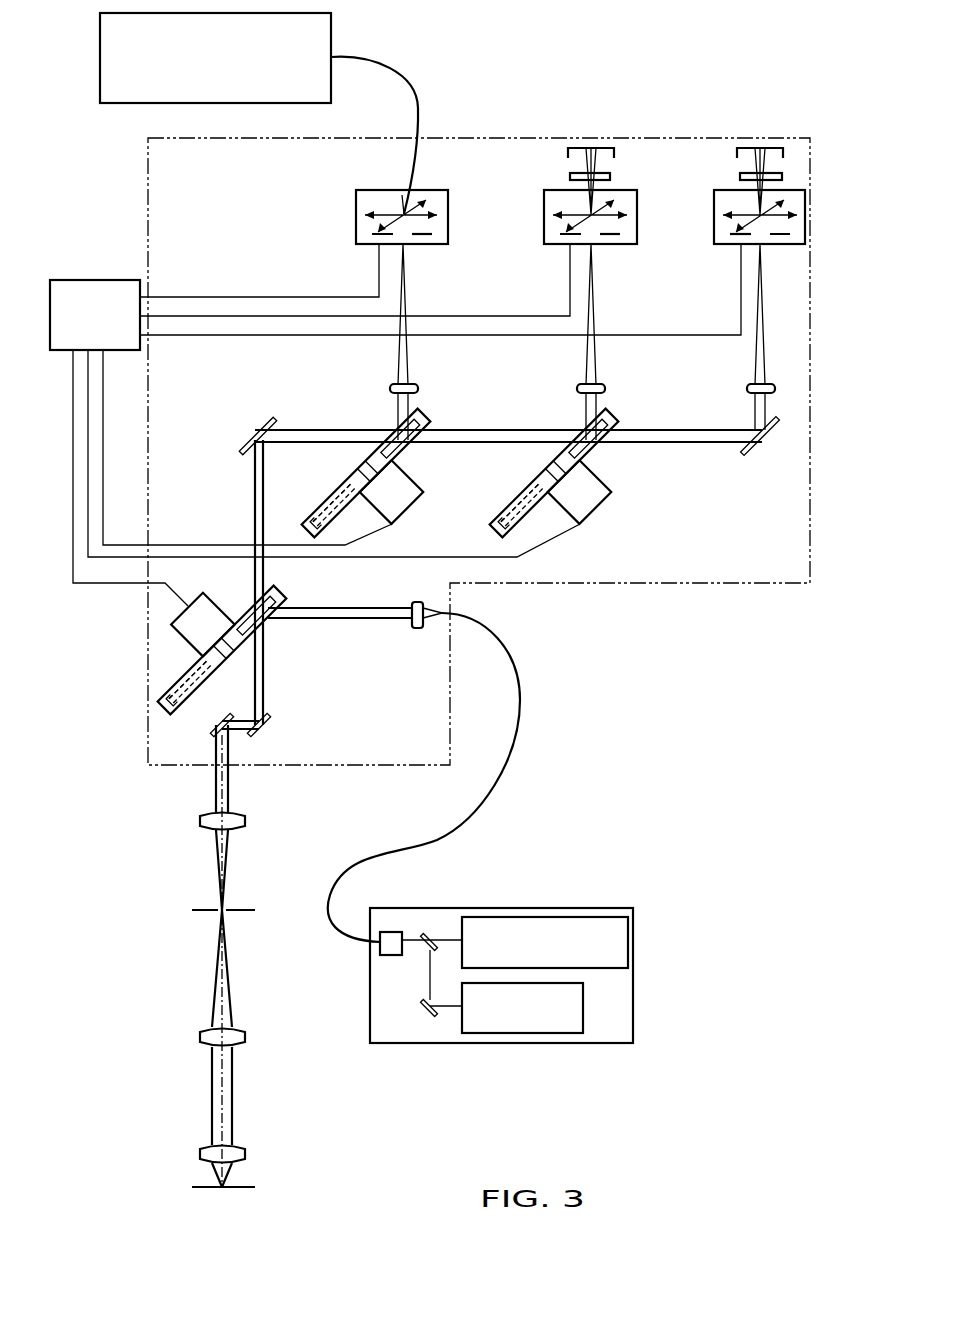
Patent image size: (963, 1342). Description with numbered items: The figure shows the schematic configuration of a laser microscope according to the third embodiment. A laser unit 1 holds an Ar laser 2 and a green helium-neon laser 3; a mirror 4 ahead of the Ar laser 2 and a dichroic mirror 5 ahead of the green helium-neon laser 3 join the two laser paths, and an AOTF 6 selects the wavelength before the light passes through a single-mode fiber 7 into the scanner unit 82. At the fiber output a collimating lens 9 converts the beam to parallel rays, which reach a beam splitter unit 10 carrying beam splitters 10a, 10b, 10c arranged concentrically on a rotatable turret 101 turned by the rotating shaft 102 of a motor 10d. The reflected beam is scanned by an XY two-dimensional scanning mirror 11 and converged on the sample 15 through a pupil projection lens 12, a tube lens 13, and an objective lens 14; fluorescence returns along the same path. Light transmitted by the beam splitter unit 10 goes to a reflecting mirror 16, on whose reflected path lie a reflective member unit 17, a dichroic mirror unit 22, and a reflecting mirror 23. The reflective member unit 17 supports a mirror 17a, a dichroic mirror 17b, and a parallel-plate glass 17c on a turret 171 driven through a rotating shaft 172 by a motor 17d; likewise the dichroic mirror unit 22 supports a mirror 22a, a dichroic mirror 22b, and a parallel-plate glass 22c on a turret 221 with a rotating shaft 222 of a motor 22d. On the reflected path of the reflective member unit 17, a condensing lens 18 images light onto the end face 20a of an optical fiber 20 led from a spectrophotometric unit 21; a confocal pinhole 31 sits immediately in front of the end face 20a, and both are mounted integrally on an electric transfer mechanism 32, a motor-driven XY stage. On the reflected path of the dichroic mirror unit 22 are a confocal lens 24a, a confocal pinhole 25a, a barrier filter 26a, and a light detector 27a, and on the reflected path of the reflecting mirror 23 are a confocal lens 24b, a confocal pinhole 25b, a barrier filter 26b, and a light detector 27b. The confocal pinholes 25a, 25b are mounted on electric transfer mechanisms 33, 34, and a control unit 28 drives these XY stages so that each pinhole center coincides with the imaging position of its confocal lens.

The laser unit 1 is at (501, 1003).
The Ar laser 2 is at (505, 1034).
The green helium-neon (HeNe-G) laser 3 is at (573, 917).
The mirror 4 is at (421, 1010).
The dichroic mirror 5 is at (433, 935).
The acousto-optic tunable filter (AOTF) 6 is at (390, 956).
The single-mode fiber 7 is at (521, 698).
The collimating lens 9 is at (418, 629).
The beam splitter unit 10 is at (169, 659).
The beam splitter 10a is at (254, 606).
The beam splitter 10b is at (168, 692).
The beam splitter 10c is at (114, 705).
The motor 10d is at (170, 620).
The XY two-dimensional scanning mirror 11 is at (240, 742).
The pupil projection lens 12 is at (247, 822).
The tube lens 13 is at (247, 1037).
The objective lens 14 is at (247, 1152).
The sample 15 is at (255, 1187).
The reflecting mirror 16 is at (262, 420).
The reflective member unit 17 is at (376, 489).
The mirror 17a is at (445, 410).
The dichroic mirror 17b is at (333, 566).
The parallel-plate glass 17c is at (342, 554).
The motor 17d is at (408, 507).
The condensing lens (imaging lens) 18 is at (414, 386).
The optical fiber 20 is at (418, 103).
The end face 20a is at (448, 217).
The spectrophotometric unit 21 is at (331, 30).
The dichroic mirror unit 22 is at (561, 483).
The mirror 22a is at (616, 418).
The dichroic mirror 22b is at (549, 547).
The parallel-plate glass 22c is at (569, 543).
The motor 22d is at (604, 510).
The reflecting mirror 23 is at (760, 455).
The confocal lens 24a is at (601, 386).
The confocal lens 24b is at (757, 386).
The confocal pinhole 25a is at (618, 238).
The confocal pinhole 25b is at (736, 238).
The barrier filter 26a is at (611, 176).
The barrier filter 26b is at (741, 176).
The light detector 27a is at (610, 148).
The light detector 27b is at (752, 148).
The control unit 28 is at (105, 280).
The confocal pinhole 31 is at (420, 235).
The electric transfer mechanism 32 is at (448, 197).
The electric transfer mechanism 33 is at (637, 202).
The electric transfer mechanism 34 is at (778, 244).
The scanner unit 82 is at (720, 584).
The turret 101 is at (190, 700).
The rotating shaft 102 is at (228, 656).
The turret 171 is at (329, 503).
The rotating shaft 172 is at (362, 472).
The turret 221 is at (503, 518).
The rotating shaft 222 is at (550, 472).